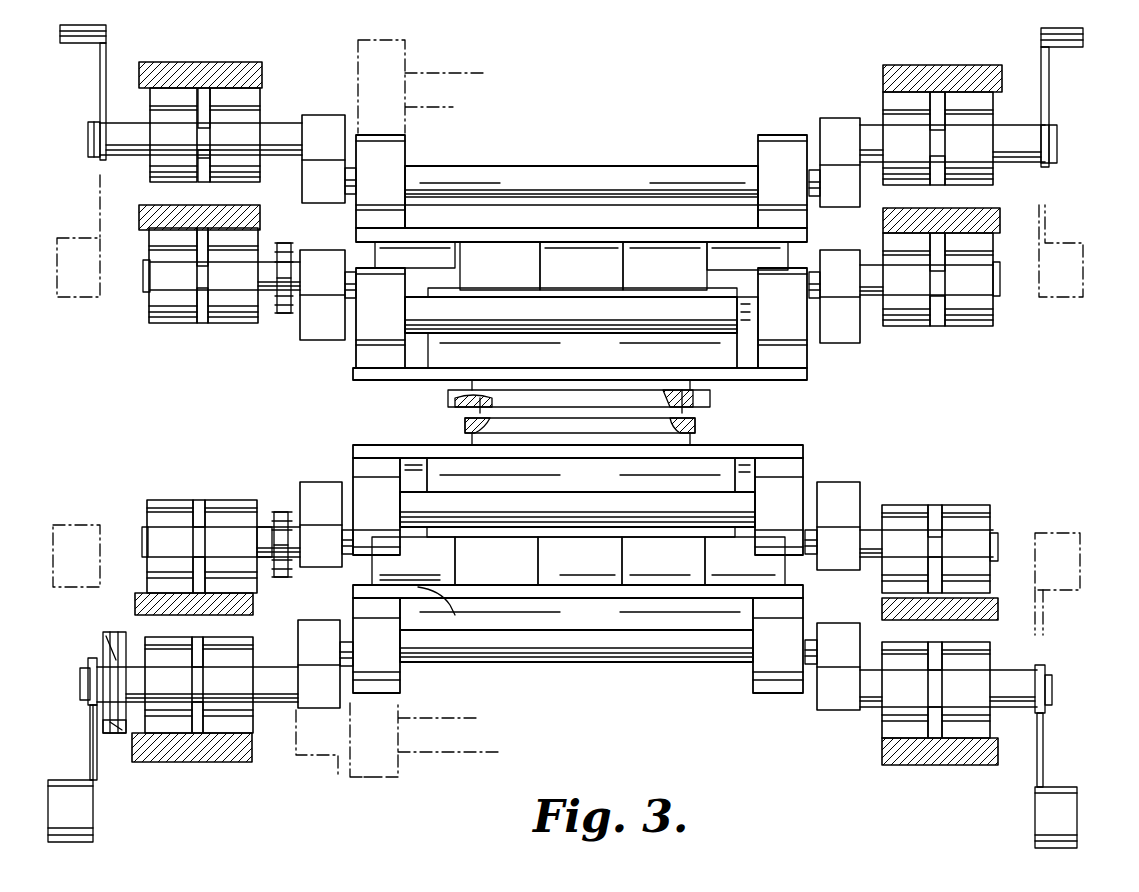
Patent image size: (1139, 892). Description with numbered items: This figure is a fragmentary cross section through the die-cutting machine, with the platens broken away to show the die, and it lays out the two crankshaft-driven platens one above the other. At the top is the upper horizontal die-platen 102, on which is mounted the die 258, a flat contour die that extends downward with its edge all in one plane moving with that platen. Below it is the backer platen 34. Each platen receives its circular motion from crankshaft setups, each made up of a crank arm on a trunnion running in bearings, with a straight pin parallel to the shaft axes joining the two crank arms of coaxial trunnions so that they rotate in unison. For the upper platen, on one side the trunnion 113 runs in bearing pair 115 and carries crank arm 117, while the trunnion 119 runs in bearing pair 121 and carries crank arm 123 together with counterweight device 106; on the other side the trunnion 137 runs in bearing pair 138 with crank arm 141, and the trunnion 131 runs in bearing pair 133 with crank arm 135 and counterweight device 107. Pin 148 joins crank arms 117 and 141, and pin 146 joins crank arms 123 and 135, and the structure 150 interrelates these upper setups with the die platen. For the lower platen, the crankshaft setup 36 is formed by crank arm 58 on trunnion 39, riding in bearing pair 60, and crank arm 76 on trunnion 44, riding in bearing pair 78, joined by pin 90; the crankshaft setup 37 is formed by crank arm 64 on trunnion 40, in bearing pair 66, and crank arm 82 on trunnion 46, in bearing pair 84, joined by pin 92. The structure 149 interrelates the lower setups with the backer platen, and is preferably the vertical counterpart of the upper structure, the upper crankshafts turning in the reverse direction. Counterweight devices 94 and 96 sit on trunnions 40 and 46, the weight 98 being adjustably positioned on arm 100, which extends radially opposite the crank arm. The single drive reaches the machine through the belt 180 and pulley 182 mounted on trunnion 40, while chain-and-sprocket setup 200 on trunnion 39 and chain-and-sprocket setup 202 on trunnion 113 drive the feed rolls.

The backer platen 34 is at (805, 448).
The crankshaft setup 36 is at (142, 538).
The crankshaft setup 37 is at (80, 686).
The trunnion 39 is at (268, 520).
The trunnion 40 is at (200, 680).
The trunnion 44 is at (868, 540).
The trunnion 46 is at (1010, 672).
The crank arm 58 is at (323, 492).
The bearing pair 60 is at (220, 508).
The crank arm 64 is at (312, 705).
The bearing pair 66 is at (225, 710).
The crank arm 76 is at (840, 495).
The bearing pair 78 is at (960, 520).
The crank arm 82 is at (825, 695).
The bearing pair 84 is at (958, 690).
The pin 90 is at (665, 515).
The pin 92 is at (545, 645).
The counterweight device 94 is at (90, 762).
The counterweight device 96 is at (1045, 762).
The weight 98 is at (65, 838).
The arm 100 is at (90, 732).
The die-platen 102 is at (413, 377).
The counterweight device 106 is at (60, 37).
The counterweight device 107 is at (1070, 47).
The trunnion 113 is at (205, 272).
The bearing pair 115 is at (222, 296).
The crank arm 117 is at (318, 335).
The trunnion 119 is at (210, 120).
The bearing pair 121 is at (225, 170).
The crank arm 123 is at (312, 125).
The trunnion 131 is at (872, 135).
The bearing pair 133 is at (970, 172).
The crank arm 135 is at (828, 135).
The trunnion 137 is at (872, 300).
The bearing pair 138 is at (962, 318).
The crank arm 141 is at (838, 340).
The pin 146 is at (600, 172).
The pin 148 is at (475, 325).
The structure 149 is at (496, 597).
The structure 150 is at (520, 267).
The belt 180 is at (112, 735).
The pulley 182 is at (103, 648).
The chain-and-sprocket setup 200 is at (285, 577).
The chain-and-sprocket setup 202 is at (280, 313).
The die 258 is at (700, 410).